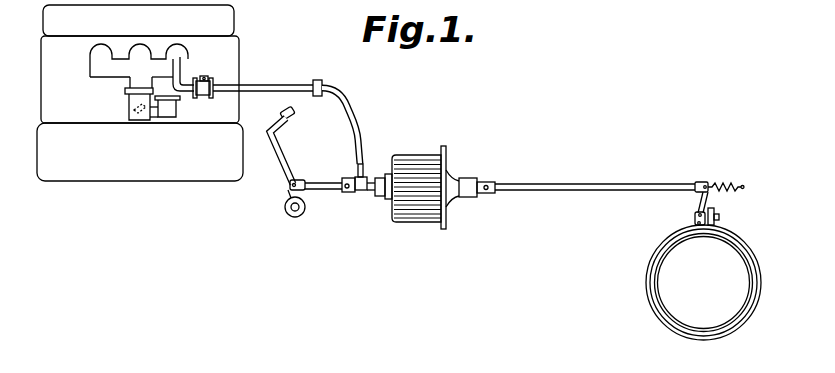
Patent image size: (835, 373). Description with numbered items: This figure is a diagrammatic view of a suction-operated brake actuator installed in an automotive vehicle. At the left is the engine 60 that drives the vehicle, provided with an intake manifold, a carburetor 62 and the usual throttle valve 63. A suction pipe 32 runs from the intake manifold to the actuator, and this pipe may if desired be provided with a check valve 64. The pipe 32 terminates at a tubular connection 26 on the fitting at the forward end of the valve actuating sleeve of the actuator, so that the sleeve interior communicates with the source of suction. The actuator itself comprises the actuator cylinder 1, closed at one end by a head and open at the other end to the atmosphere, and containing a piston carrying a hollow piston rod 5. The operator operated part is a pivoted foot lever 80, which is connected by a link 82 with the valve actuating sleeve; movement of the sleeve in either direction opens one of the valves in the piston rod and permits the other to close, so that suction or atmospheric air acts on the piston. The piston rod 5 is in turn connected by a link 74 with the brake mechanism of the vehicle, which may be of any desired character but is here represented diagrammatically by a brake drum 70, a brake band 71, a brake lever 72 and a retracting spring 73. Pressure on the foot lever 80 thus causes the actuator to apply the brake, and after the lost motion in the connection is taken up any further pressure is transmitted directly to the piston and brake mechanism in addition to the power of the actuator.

The engine 60 is at (233, 21).
The carburetor 62 is at (126, 100).
The throttle valve 63 is at (141, 121).
The check valve 64 is at (209, 79).
The suction pipe 32 is at (321, 88).
The tubular connection 26 is at (362, 171).
The operator operated part 80 is at (274, 143).
The link 82 is at (332, 191).
The actuator cylinder 1 is at (413, 167).
The hollow piston rod 5 is at (451, 193).
The link 74 is at (553, 186).
The retracting spring 73 is at (726, 187).
The brake lever 72 is at (698, 203).
The brake band 71 is at (745, 246).
The brake drum 70 is at (659, 276).